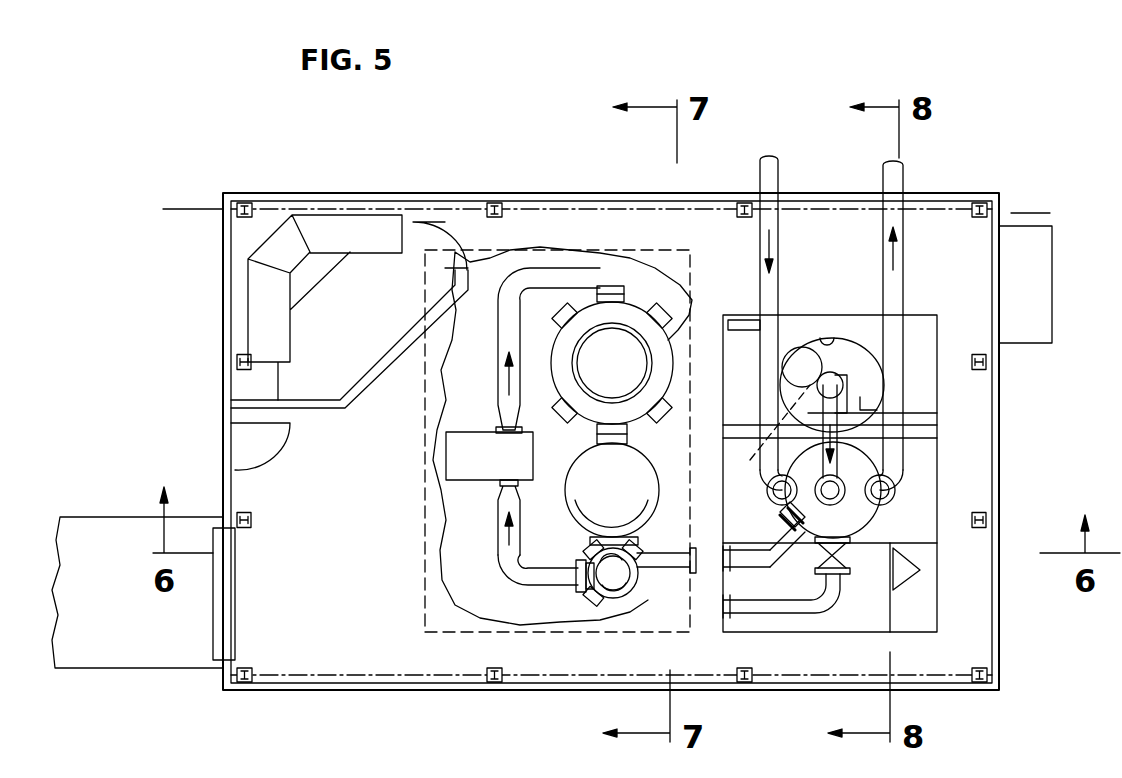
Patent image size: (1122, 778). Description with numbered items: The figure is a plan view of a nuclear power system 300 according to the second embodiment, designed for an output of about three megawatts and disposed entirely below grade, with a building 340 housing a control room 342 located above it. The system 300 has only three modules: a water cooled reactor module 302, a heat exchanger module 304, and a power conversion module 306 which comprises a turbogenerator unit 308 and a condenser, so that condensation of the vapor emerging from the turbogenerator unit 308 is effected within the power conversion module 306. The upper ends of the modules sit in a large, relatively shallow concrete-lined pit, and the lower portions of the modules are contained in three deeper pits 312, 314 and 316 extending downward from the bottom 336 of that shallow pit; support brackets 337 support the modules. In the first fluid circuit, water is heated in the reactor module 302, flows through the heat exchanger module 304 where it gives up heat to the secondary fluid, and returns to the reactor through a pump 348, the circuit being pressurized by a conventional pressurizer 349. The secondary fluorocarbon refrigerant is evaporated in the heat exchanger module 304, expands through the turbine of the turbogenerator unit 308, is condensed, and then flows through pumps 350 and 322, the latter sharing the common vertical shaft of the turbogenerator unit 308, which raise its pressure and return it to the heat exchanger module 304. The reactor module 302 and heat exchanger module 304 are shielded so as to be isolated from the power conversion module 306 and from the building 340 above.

The system 300 is at (447, 708).
The water cooled reactor module 302 is at (612, 363).
The heat exchanger module 304 is at (586, 590).
The power conversion module 306 is at (850, 570).
The turbogenerator unit 308 is at (875, 500).
The deeper pit 312 is at (690, 340).
The deeper pit 314 is at (640, 560).
The deeper pit 316 is at (830, 340).
The pump 322 is at (880, 545).
The bottom of pit 336 is at (639, 442).
The support brackets 337 is at (568, 422).
The building 340 is at (328, 700).
The control room 342 is at (367, 398).
The pump 348 is at (489, 456).
The pressurizer 349 is at (612, 490).
The pump 350 is at (840, 385).